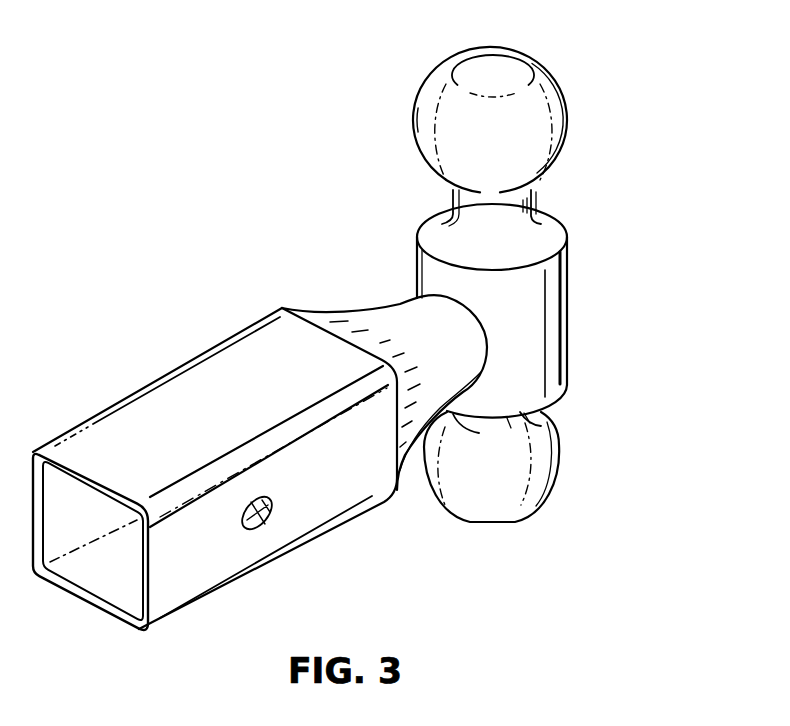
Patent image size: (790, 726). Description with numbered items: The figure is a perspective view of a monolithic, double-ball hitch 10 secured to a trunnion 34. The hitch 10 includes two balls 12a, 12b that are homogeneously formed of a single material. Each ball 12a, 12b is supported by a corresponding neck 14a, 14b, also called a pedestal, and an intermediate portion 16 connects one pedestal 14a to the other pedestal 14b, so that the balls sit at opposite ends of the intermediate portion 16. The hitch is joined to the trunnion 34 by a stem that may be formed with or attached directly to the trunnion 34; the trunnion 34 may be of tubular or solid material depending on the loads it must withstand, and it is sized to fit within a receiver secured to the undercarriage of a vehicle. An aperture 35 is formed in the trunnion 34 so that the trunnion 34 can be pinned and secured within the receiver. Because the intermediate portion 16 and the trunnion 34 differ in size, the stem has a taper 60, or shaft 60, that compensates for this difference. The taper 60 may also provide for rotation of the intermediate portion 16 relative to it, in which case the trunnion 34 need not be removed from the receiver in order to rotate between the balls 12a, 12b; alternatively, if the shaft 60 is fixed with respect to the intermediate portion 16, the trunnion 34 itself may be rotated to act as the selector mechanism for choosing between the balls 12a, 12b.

The hitch 10 is at (566, 62).
The ball 12a is at (557, 141).
The ball 12b is at (533, 470).
The neck 14a is at (523, 208).
The neck 14b is at (528, 428).
The intermediate portion 16 is at (552, 311).
The trunnion 34 is at (168, 405).
The aperture 35 is at (265, 522).
The taper 60 is at (397, 317).